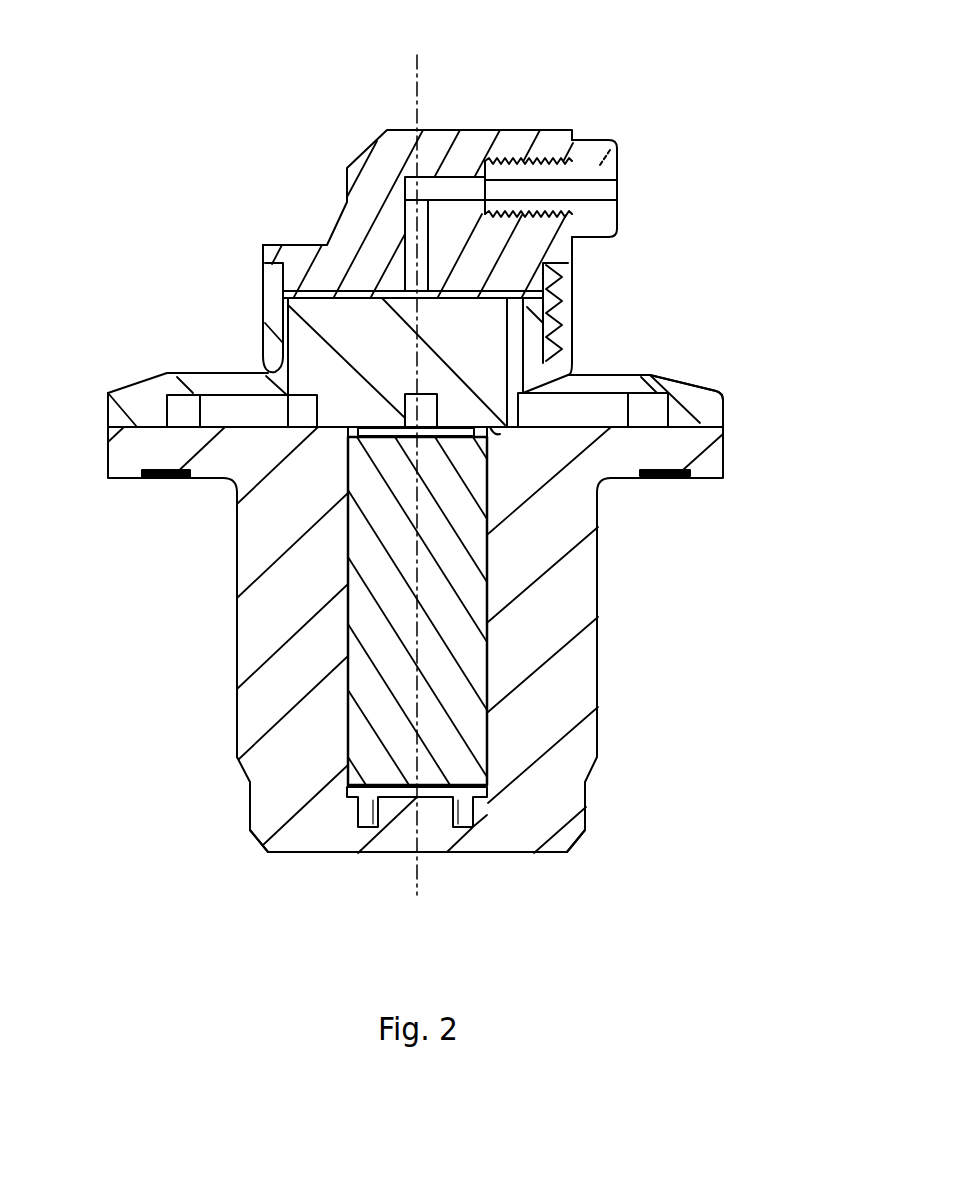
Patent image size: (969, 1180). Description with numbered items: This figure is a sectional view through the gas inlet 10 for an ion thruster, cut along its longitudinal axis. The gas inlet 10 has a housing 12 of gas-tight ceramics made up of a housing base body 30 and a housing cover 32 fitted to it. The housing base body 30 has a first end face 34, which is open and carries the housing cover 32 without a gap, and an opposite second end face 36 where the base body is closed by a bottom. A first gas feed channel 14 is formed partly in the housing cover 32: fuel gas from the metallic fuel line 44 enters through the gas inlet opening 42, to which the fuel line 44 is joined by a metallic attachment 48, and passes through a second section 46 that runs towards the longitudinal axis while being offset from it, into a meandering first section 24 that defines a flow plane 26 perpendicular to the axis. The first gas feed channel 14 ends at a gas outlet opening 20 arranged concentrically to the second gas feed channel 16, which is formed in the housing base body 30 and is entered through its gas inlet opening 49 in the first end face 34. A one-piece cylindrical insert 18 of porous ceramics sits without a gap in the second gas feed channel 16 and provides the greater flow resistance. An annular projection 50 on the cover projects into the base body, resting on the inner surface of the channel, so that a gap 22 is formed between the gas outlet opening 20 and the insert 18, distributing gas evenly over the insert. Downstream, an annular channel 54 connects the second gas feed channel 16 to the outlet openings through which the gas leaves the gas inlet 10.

The gas inlet 10 is at (108, 68).
The housing 12 is at (97, 435).
The first gas feed channel 14 is at (532, 388).
The second gas feed channel 16 is at (340, 652).
The insert 18 is at (362, 728).
The gas outlet opening 20 is at (413, 393).
The gap 22 is at (362, 425).
The first section 24 is at (657, 402).
The flow plane 26 is at (685, 415).
The housing base body 30 is at (252, 737).
The housing cover 32 is at (197, 385).
The first end face 34 is at (135, 427).
The second end face 36 is at (302, 855).
The gas inlet opening 42 is at (548, 296).
The fuel line 44 is at (612, 165).
The second section 46 is at (520, 352).
The metallic attachment 48 is at (255, 242).
The gas inlet opening 49 is at (340, 438).
The annular projection 50 is at (489, 437).
The annular channel 54 is at (472, 803).